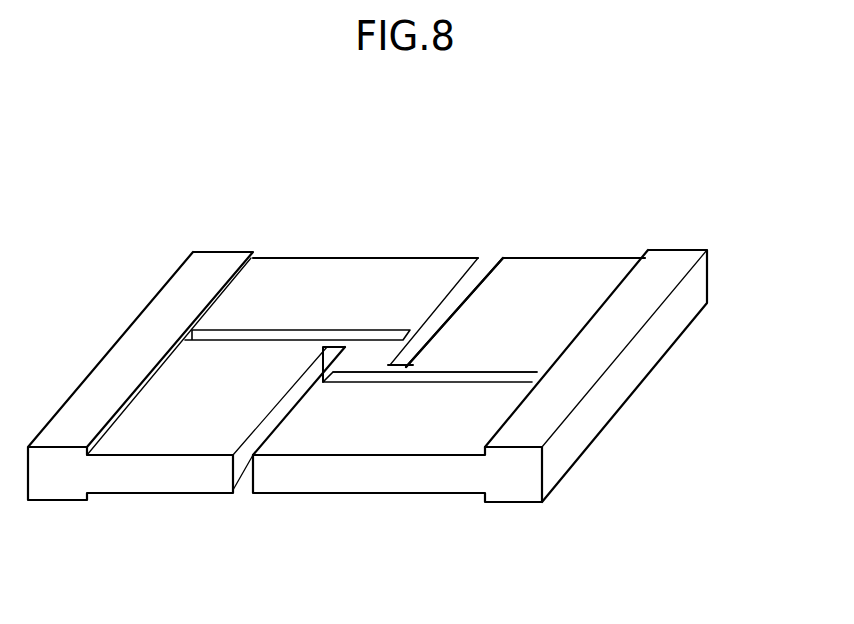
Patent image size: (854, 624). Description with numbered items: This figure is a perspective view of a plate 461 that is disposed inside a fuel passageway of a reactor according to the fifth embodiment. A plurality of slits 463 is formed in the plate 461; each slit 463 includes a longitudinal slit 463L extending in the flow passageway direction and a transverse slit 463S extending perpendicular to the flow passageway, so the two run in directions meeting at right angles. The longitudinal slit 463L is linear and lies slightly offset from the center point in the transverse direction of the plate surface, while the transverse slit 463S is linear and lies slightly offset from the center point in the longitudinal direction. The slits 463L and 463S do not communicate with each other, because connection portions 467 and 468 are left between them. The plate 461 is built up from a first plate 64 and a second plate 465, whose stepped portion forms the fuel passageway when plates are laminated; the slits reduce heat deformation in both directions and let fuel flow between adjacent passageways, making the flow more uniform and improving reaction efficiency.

The first plate 64 is at (660, 258).
The plate 461 is at (617, 128).
The slit 463 is at (465, 292).
The longitudinal slit 463L is at (483, 285).
The transverse slit 463S is at (487, 378).
The second plate 465 is at (182, 413).
The connection portion 467 is at (400, 367).
The connection portion 468 is at (412, 335).